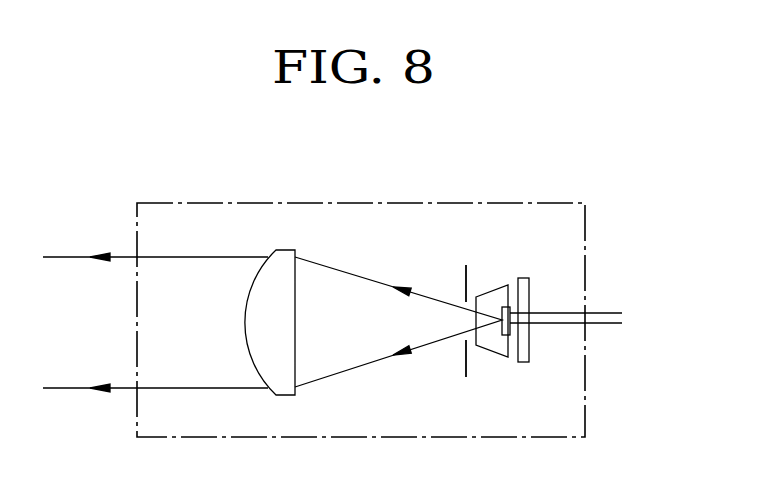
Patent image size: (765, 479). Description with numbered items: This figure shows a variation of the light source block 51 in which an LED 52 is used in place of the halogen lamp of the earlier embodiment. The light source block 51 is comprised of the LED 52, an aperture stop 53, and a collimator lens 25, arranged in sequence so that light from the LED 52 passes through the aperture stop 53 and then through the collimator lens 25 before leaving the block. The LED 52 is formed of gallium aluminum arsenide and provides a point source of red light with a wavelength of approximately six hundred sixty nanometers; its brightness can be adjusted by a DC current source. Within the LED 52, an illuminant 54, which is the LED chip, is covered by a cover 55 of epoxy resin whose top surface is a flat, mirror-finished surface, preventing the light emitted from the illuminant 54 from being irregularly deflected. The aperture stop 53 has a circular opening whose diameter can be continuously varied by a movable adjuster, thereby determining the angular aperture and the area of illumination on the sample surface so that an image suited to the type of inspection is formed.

The collimator lens 25 is at (284, 250).
The light source block 51 is at (541, 202).
The LED 52 is at (516, 257).
The aperture stop 53 is at (465, 272).
The illuminant 54 is at (503, 340).
The cover 55 is at (481, 348).